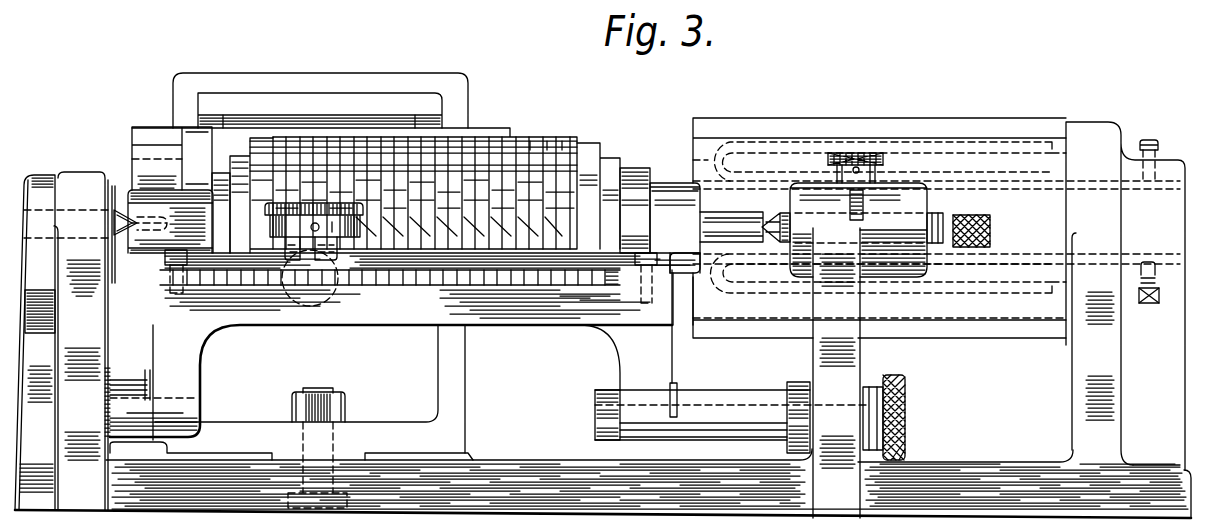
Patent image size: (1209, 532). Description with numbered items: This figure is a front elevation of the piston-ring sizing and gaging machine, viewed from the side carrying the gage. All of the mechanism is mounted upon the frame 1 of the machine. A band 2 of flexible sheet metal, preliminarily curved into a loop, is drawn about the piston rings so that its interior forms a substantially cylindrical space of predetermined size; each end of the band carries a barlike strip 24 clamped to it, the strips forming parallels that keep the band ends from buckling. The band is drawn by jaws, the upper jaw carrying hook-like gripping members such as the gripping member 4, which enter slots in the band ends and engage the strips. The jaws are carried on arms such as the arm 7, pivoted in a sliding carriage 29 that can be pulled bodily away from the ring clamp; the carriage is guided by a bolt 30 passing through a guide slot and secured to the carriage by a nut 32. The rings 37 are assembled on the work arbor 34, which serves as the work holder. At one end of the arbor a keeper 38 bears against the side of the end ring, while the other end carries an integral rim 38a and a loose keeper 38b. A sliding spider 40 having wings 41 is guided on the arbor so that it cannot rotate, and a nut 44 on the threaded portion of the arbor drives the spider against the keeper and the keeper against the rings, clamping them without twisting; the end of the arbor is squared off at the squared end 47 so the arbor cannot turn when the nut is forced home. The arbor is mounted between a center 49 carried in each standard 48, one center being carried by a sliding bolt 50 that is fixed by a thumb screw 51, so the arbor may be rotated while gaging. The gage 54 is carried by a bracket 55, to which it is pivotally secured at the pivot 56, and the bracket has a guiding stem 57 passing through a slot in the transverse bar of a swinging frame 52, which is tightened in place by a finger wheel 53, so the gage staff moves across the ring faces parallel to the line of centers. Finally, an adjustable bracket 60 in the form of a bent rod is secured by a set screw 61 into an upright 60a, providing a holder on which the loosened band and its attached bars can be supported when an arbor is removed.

The frame 1 is at (507, 470).
The band 2 is at (1003, 322).
The gripping member 4 is at (150, 167).
The arm 7 is at (197, 152).
The strip 24 is at (750, 128).
The sliding carriage 29 is at (455, 98).
The bolt 30 is at (312, 388).
The nut 32 is at (340, 400).
The work arbor 34 is at (150, 256).
The rings 37 is at (570, 140).
The keeper 38 is at (588, 155).
The integral rim 38a is at (222, 177).
The loose keeper 38b is at (262, 150).
The sliding spider 40 is at (635, 227).
The wings 41 is at (632, 172).
The nut 44 is at (683, 272).
The squared end 47 is at (140, 237).
The standard 48 is at (92, 340).
The center 49 is at (113, 218).
The sliding bolt 50 is at (937, 217).
The thumb screw 51 is at (855, 153).
The swinging frame 52 is at (637, 352).
The finger wheel 53 is at (906, 398).
The gage 54 is at (268, 214).
The bracket 55 is at (338, 262).
The pivot 56 is at (285, 287).
The guiding stem 57 is at (338, 290).
The adjustable bracket 60 is at (712, 160).
The upright 60a is at (1094, 152).
The set screw 61 is at (1158, 143).